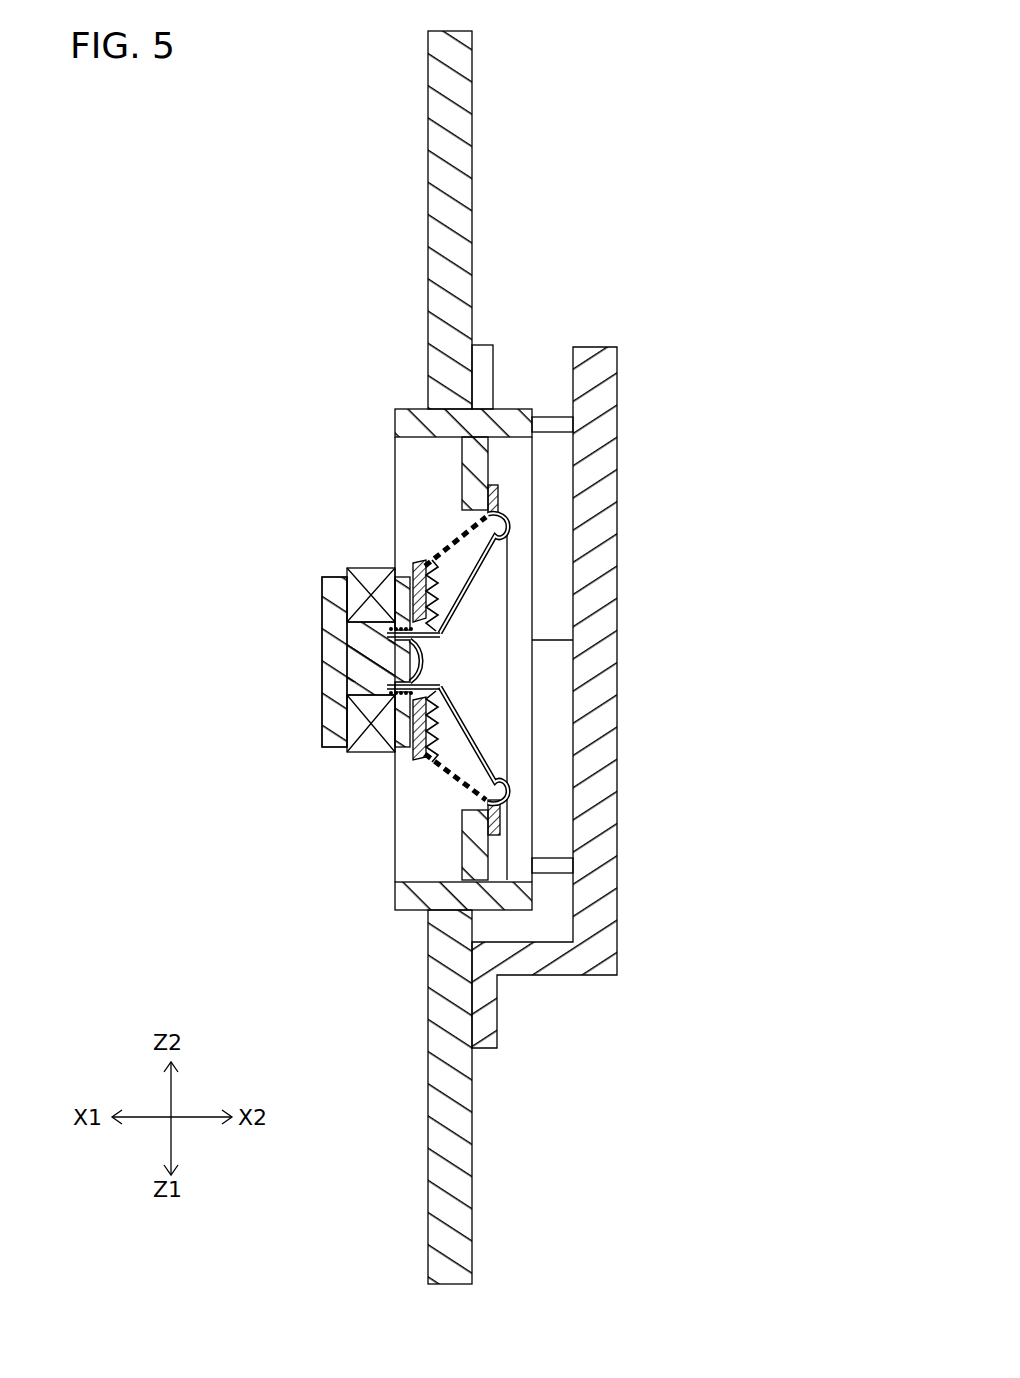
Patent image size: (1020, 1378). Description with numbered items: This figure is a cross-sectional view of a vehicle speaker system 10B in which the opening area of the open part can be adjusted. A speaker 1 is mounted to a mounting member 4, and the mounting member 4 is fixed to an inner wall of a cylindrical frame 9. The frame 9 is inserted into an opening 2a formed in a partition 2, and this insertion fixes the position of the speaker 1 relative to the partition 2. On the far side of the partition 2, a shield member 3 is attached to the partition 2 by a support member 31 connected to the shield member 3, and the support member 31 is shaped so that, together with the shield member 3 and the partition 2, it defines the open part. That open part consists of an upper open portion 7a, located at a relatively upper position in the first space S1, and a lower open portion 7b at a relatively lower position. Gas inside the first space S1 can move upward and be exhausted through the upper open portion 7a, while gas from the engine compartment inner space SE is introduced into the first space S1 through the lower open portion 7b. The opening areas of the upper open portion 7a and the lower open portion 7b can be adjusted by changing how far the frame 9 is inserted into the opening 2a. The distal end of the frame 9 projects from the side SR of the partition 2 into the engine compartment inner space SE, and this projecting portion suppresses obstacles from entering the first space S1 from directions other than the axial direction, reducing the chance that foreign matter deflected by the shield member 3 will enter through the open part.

The vehicle speaker system 10B is at (210, 230).
The speaker 1 is at (320, 576).
The partition 2 is at (452, 217).
The opening 2a is at (493, 615).
The shield member 3 is at (597, 405).
The mounting member 4 is at (470, 467).
The upper open portion 7a is at (543, 397).
The lower open portion 7b is at (558, 792).
The frame 9 is at (405, 430).
The support member 31 is at (533, 960).
The first space S1 is at (563, 689).
The vehicle interior side SR is at (144, 416).
The engine compartment inner space SE is at (800, 421).